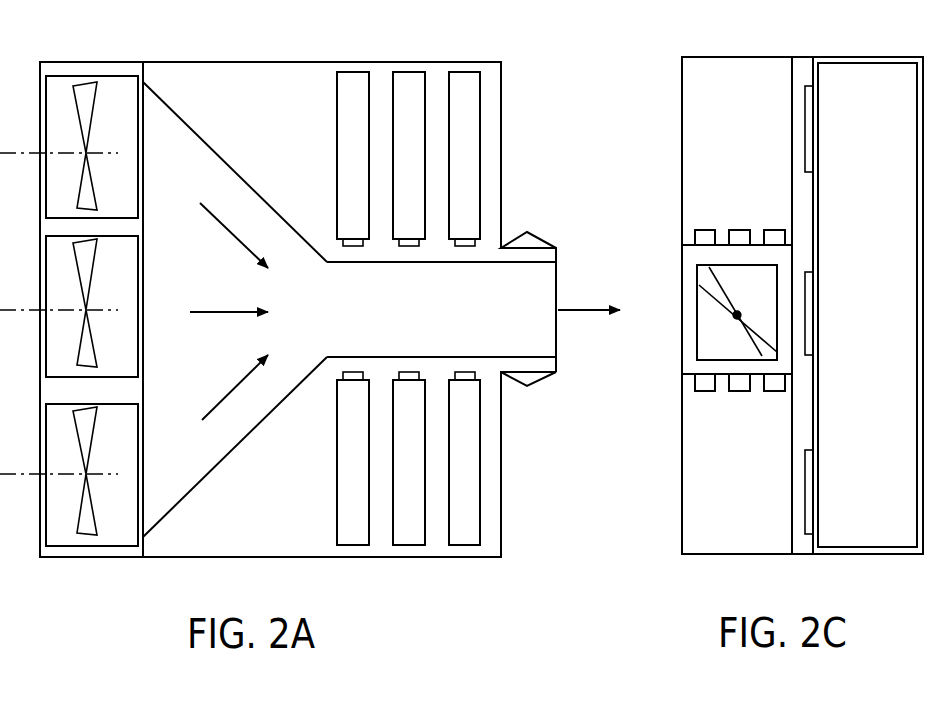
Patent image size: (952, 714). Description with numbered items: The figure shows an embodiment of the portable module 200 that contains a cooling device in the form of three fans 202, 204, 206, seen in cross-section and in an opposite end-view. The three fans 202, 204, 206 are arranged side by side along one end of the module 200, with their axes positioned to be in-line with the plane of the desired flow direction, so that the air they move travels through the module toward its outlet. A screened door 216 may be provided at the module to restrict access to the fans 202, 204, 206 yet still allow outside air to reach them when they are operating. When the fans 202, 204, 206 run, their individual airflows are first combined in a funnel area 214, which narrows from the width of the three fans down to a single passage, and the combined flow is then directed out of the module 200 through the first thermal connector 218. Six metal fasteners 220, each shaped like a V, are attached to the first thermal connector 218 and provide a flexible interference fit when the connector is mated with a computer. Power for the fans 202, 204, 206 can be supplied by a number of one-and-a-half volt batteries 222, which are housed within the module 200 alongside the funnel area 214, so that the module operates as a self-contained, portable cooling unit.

In FIG. 2A, the portable module 200 is at (504, 35).
In FIG. 2C, the portable module 200 is at (816, 33).
In FIG. 2A, the fan 202 is at (95, 100).
In FIG. 2A, the fan 204 is at (97, 257).
In FIG. 2C, the fan 204 is at (757, 330).
In FIG. 2A, the fan 206 is at (95, 518).
In FIG. 2A, the funnel area 214 is at (213, 258).
In FIG. 2A, the screened door 216 is at (562, 248).
In FIG. 2C, the screened door 216 is at (840, 556).
In FIG. 2A, the first thermal connector 218 is at (557, 298).
In FIG. 2C, the first thermal connector 218 is at (681, 355).
In FIG. 2A, the metal fastener 220 is at (505, 247).
In FIG. 2C, the metal fastener 220 is at (740, 230).
In FIG. 2A, the battery 222 is at (417, 100).